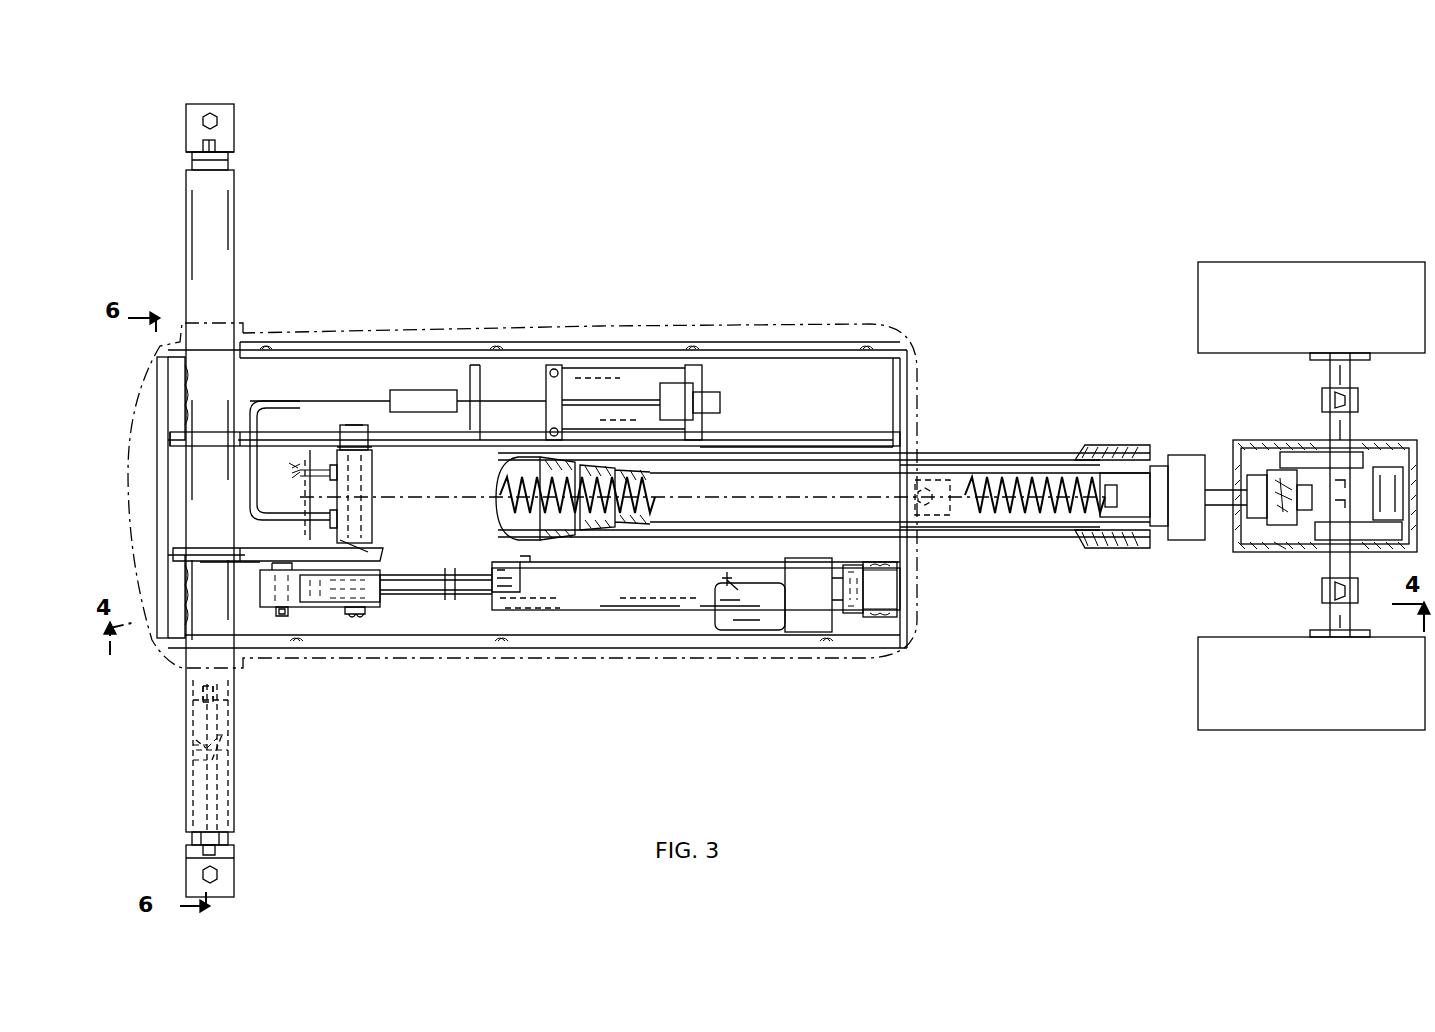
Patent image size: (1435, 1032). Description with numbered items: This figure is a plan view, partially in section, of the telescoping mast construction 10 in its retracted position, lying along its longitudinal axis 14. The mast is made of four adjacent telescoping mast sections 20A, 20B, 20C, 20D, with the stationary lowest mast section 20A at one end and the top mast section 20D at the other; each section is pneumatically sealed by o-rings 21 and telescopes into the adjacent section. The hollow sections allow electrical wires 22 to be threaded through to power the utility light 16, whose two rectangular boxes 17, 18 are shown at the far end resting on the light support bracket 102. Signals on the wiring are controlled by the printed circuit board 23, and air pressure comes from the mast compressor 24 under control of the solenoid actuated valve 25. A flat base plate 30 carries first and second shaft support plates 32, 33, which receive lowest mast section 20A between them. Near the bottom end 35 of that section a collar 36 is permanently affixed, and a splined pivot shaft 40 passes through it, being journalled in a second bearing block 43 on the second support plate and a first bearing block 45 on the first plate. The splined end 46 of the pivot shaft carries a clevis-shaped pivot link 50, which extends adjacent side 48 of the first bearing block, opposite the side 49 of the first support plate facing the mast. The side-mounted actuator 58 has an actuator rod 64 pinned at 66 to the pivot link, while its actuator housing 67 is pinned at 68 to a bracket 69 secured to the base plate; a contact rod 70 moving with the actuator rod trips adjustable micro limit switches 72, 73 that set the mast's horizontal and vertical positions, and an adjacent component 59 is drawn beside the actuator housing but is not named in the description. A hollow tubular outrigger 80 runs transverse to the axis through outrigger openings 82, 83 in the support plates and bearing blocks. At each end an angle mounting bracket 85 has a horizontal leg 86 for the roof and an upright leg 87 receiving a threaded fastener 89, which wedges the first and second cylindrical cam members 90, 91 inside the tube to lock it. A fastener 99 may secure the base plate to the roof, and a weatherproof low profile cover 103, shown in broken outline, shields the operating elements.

The telescoping mast construction 10 is at (1030, 430).
The longitudinal axis 14 is at (460, 495).
The utility light 16 is at (1354, 260).
The rectangular box 17 is at (1278, 282).
The rectangular box 18 is at (1276, 712).
The lowest mast section 20A is at (942, 448).
The mast section 20B is at (985, 452).
The mast section 20C is at (986, 545).
The top mast section 20D is at (1036, 535).
The o-rings 21 is at (1118, 448).
The electrical wires 22 is at (515, 478).
The printed circuit board 23 is at (604, 562).
The mast compressor 24 is at (640, 378).
The solenoid actuated valve 25 is at (418, 392).
The base plate 30 is at (340, 350).
The first shaft support plate 32 is at (410, 565).
The second shaft support plate 33 is at (490, 446).
The bottom end 35 is at (378, 468).
The collar 36 is at (372, 496).
The pivot shaft 40 is at (372, 515).
The second bearing block 43 is at (318, 438).
The first bearing block 45 is at (392, 612).
The splined end 46 is at (354, 618).
The side 48 is at (248, 562).
The side 49 is at (262, 532).
The pivot link 50 is at (327, 607).
The actuator 58 is at (651, 608).
The motor 59 is at (745, 630).
The actuator rod 64 is at (450, 602).
The pin 66 is at (282, 618).
The actuator housing 67 is at (810, 634).
The pin 68 is at (852, 616).
The bracket 69 is at (870, 604).
The contact rod 70 is at (482, 604).
The micro limit switch 72 is at (508, 575).
The micro limit switch 73 is at (736, 590).
The tubular outrigger 80 is at (236, 246).
The outrigger opening 82 is at (240, 550).
The outrigger opening 83 is at (186, 436).
The angle mounting bracket 85 is at (236, 108).
The horizontal leg 86 is at (190, 112).
The upright leg 87 is at (234, 151).
The threaded fastener 89 is at (203, 146).
The first cylindrical cam member 90 is at (226, 802).
The second cylindrical cam member 91 is at (192, 736).
The fastener 99 is at (930, 518).
The light support bracket 102 is at (1325, 405).
The weatherproof low profile cover 103 is at (722, 322).